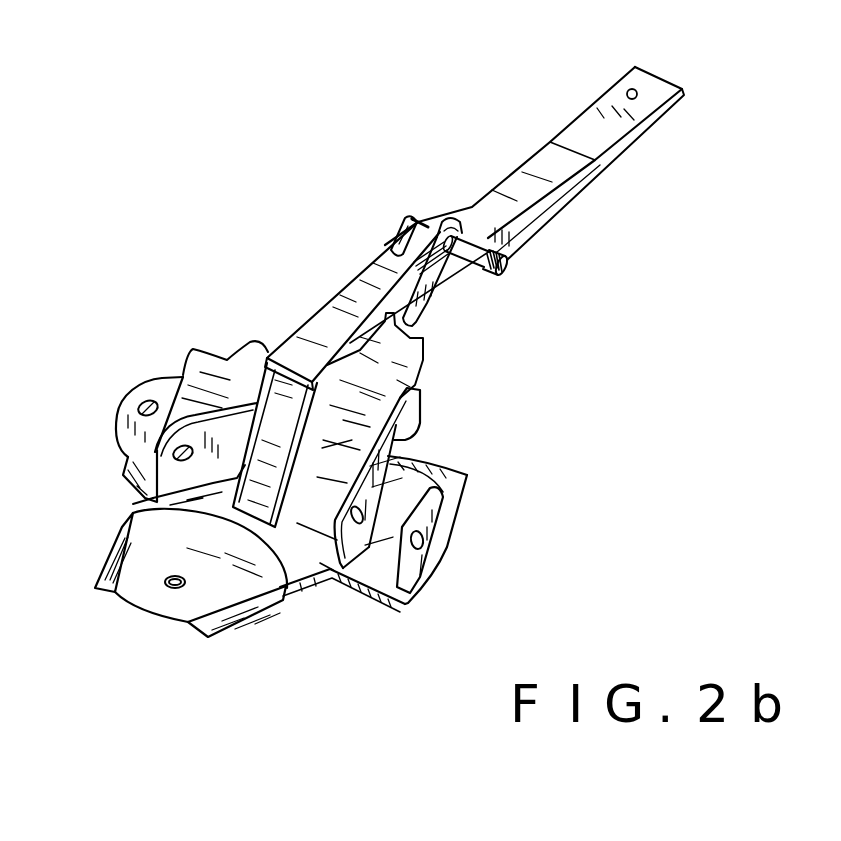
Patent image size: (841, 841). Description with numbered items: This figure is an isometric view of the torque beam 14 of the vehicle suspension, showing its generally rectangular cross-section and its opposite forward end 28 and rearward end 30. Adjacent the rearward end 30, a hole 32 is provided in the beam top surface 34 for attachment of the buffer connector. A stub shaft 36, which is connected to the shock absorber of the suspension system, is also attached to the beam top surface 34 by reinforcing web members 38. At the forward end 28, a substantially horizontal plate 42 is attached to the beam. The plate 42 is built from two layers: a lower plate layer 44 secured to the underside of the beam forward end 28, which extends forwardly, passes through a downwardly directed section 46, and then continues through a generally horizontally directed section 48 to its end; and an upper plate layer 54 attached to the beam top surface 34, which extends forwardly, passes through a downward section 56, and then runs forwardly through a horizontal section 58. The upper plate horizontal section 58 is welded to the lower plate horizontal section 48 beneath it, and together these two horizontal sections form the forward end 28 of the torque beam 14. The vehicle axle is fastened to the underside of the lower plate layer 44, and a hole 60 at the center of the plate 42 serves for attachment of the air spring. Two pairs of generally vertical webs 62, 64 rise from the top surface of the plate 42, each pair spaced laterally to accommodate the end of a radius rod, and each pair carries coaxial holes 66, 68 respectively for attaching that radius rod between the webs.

The torque beam 14 is at (348, 270).
The forward end 28 is at (242, 647).
The rearward end 30 is at (675, 138).
The hole 32 is at (637, 92).
The beam top surface 34 is at (512, 178).
The stub shaft 36 is at (486, 235).
The reinforcing web members 38 is at (412, 222).
The horizontal plate 42 is at (297, 597).
The lower plate layer 44 is at (378, 582).
The downwardly directed section 46 is at (427, 528).
The horizontally directed section 48 is at (327, 598).
The upper plate layer 54 is at (265, 348).
The downward section 56 is at (350, 453).
The horizontal section 58 is at (133, 504).
The hole 60 is at (173, 577).
The vertical webs 62 is at (388, 456).
The vertical webs 64 is at (165, 388).
The coaxial holes 66 is at (365, 511).
The coaxial holes 68 is at (147, 405).